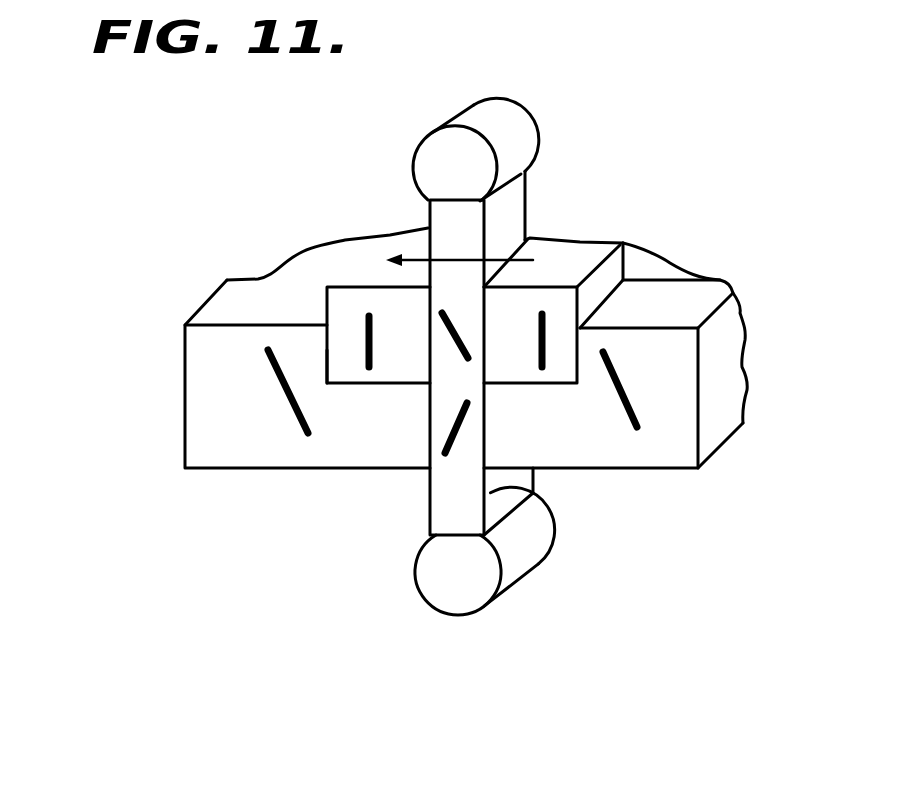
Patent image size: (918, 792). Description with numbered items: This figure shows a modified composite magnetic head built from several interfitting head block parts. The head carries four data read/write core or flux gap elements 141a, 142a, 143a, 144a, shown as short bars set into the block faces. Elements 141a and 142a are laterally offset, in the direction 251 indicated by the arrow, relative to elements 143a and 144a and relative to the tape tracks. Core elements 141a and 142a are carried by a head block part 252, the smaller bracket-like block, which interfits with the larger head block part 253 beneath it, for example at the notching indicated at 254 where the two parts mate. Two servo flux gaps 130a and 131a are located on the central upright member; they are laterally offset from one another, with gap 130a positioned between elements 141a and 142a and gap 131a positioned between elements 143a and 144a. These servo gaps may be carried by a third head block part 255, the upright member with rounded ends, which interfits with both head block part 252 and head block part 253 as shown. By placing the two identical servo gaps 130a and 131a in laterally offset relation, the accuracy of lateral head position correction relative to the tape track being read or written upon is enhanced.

The direction 251 is at (495, 282).
The head block part 252 is at (365, 268).
The head block part 253 is at (212, 373).
The notching 254 is at (327, 358).
The head block part 255 is at (489, 492).
The servo flux gap 130a is at (455, 330).
The servo flux gap 131a is at (462, 415).
The data read/write core element 141a is at (547, 325).
The data read/write core element 142a is at (364, 342).
The data read/write core element 143a is at (612, 378).
The data read/write core element 144a is at (283, 392).